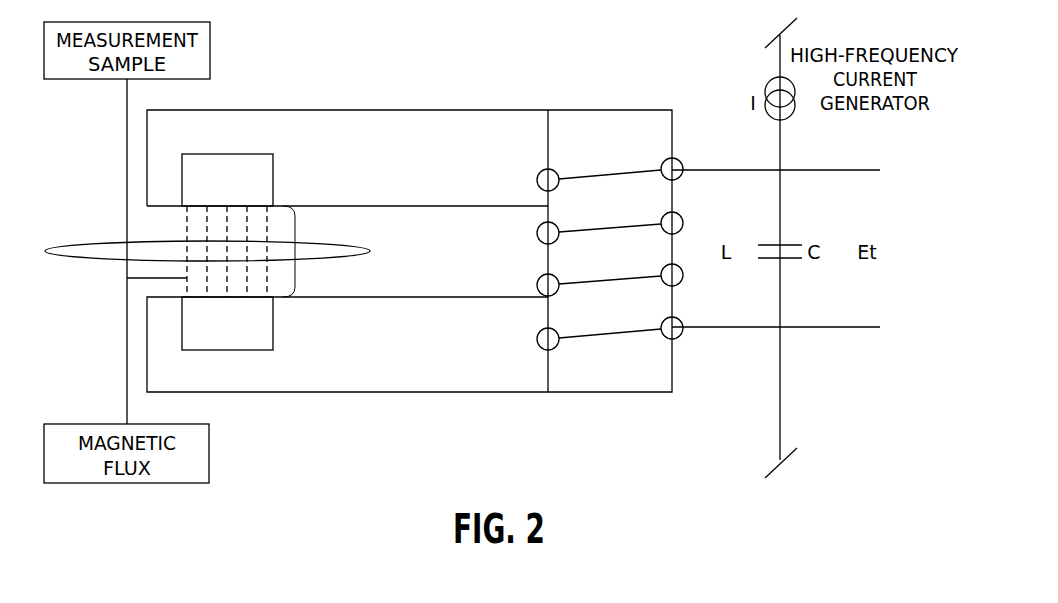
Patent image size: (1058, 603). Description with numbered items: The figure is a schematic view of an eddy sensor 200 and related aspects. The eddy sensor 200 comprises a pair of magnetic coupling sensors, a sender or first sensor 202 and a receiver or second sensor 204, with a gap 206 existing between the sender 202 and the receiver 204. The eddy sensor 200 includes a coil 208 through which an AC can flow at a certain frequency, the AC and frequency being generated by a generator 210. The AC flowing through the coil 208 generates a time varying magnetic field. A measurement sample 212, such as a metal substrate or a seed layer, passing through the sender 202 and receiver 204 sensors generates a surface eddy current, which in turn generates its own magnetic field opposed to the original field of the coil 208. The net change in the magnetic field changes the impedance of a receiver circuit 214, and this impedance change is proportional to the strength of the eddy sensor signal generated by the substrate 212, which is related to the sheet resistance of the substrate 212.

The eddy sensor 200 is at (466, 82).
The first sensor 202 is at (228, 153).
The second sensor 204 is at (228, 351).
The gap 206 is at (297, 252).
The coil 208 is at (610, 172).
The generator 210 is at (768, 82).
The measurement sample 212 is at (104, 242).
The receiver circuit 214 is at (790, 243).